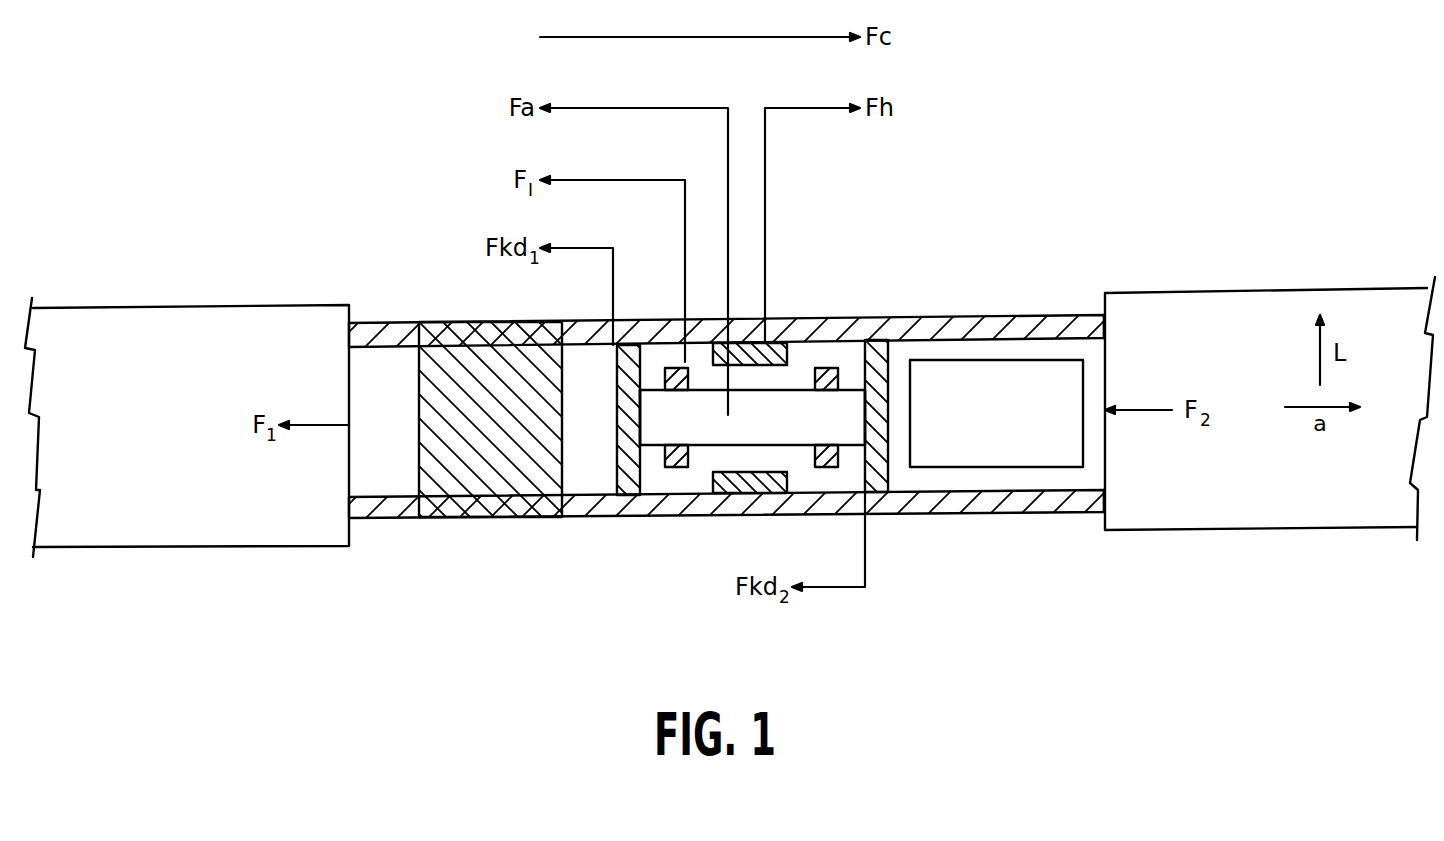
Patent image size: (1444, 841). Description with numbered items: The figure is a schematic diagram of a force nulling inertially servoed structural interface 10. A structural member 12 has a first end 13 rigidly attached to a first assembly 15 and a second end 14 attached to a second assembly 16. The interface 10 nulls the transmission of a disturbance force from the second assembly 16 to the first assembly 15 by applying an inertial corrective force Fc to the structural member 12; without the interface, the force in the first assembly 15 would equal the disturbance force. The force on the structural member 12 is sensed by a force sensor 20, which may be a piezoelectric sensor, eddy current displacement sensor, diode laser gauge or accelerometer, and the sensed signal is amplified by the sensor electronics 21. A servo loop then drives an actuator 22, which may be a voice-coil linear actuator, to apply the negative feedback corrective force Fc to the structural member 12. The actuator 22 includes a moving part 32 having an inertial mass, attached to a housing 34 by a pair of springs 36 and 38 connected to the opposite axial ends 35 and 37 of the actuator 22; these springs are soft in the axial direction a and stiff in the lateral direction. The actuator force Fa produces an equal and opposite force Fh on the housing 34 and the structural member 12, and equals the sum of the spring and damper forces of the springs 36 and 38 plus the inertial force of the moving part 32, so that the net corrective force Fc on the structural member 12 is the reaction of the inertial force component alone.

The force nulling inertially servoed structural interface 10 is at (705, 371).
The structural member 12 is at (1017, 510).
The first end 13 is at (349, 323).
The second end 14 is at (1103, 315).
The first assembly 15 is at (200, 547).
The second assembly 16 is at (1313, 530).
The force sensor 20 is at (490, 498).
The sensor electronics 21 is at (983, 373).
The actuator 22 is at (795, 433).
The moving part 32 is at (688, 447).
The housing 34 is at (757, 473).
The axial end 35 is at (640, 390).
The spring 36 is at (633, 485).
The axial end 37 is at (865, 388).
The spring 38 is at (875, 482).